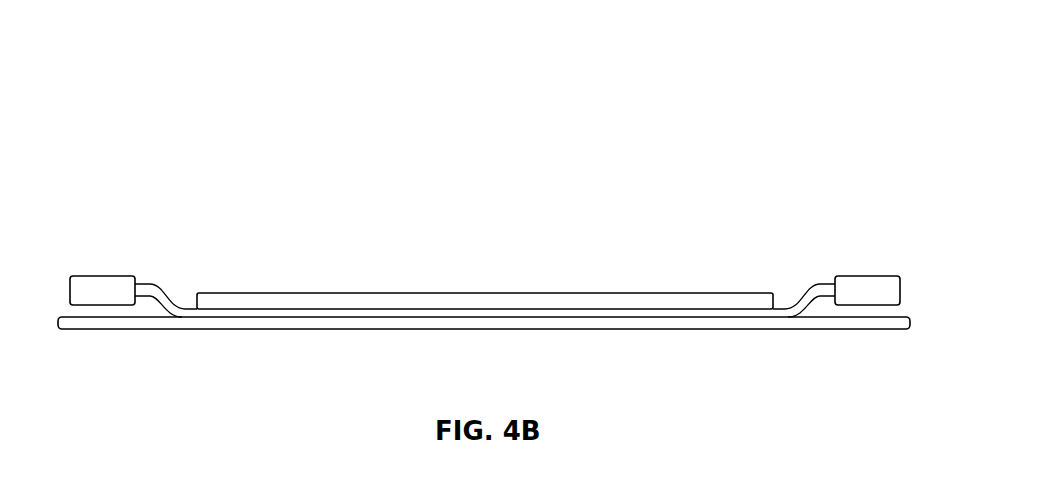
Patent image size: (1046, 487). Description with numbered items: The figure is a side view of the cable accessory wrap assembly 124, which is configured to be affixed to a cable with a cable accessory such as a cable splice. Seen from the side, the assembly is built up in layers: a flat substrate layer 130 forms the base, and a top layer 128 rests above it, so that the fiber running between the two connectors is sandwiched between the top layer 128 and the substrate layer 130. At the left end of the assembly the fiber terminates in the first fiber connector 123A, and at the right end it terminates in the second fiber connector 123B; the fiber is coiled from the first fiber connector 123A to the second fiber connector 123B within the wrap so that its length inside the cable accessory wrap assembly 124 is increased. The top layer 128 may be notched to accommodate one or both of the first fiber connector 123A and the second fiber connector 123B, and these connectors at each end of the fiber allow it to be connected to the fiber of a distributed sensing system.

The first fiber connector 123A is at (118, 294).
The second fiber connector 123B is at (860, 291).
The cable accessory wrap assembly 124 is at (238, 158).
The top layer 128 is at (479, 300).
The substrate layer 130 is at (578, 325).